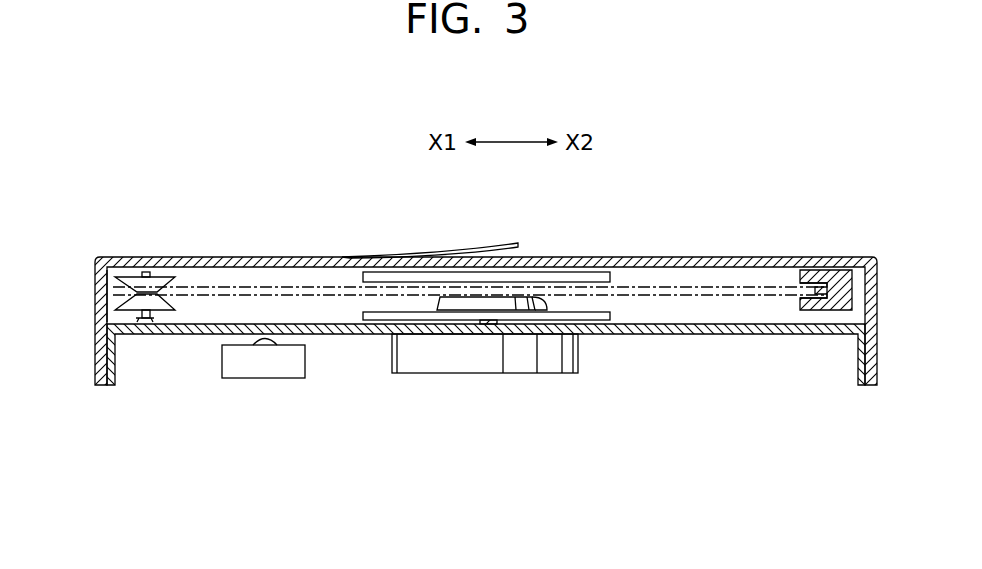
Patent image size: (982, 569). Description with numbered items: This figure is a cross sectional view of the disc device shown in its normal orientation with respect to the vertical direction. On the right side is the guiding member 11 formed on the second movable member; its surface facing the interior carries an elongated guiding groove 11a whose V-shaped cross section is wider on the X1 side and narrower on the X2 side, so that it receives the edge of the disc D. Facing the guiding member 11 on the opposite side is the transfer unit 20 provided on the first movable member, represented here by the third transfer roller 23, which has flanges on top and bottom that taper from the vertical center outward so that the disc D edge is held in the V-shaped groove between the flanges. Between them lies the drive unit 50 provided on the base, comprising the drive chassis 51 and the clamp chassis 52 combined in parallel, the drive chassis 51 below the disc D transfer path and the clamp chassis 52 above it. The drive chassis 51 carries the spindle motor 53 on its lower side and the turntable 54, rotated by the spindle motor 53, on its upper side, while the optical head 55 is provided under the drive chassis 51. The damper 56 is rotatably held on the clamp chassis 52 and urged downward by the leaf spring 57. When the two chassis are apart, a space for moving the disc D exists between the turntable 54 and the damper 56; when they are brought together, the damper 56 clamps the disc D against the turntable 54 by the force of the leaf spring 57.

The guiding member 11 is at (833, 270).
The elongated guiding groove 11a is at (802, 288).
The transfer unit 20 is at (113, 315).
The third transfer roller 23 is at (128, 290).
The drive unit 50 is at (642, 230).
The drive chassis 51 is at (790, 335).
The clamp chassis 52 is at (272, 258).
The spindle motor 53 is at (445, 360).
The turntable 54 is at (541, 301).
The optical head 55 is at (265, 360).
The damper 56 is at (588, 271).
The leaf spring 57 is at (472, 247).
The disc D is at (710, 296).